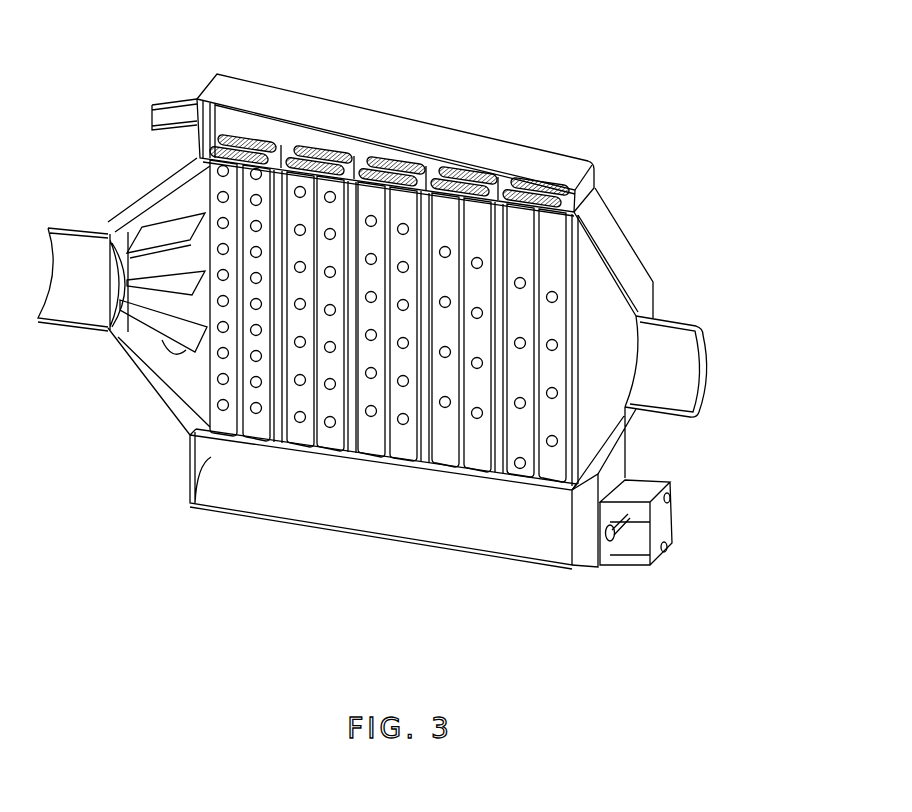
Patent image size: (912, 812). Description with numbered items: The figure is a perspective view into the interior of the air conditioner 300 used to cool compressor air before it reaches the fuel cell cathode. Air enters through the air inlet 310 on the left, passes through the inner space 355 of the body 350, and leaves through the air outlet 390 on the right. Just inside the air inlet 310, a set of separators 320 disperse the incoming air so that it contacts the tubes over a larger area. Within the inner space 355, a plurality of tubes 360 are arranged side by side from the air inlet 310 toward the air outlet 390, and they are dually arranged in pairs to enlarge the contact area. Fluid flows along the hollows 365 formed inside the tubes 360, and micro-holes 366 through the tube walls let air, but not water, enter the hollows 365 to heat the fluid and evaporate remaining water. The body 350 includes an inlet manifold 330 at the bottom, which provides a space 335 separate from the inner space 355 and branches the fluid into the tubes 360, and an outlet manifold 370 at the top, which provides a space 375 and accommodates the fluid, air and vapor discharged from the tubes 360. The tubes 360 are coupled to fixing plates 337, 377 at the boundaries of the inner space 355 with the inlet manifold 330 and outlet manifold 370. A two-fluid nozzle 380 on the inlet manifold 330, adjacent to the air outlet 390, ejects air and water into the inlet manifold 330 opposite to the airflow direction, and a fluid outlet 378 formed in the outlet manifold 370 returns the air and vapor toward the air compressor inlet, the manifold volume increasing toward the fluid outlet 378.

The air conditioner 300 is at (732, 124).
The air inlet 310 is at (88, 305).
The separators 320 is at (157, 232).
The inlet manifold 330 is at (518, 540).
The space 335 is at (366, 503).
The fixing plate 337 is at (588, 505).
The body 350 is at (608, 228).
The inner space 355 is at (592, 316).
The tubes 360 is at (338, 215).
The hollows 365 is at (318, 158).
The micro-holes 366 is at (330, 192).
The outlet manifold 370 is at (230, 122).
The space 375 is at (254, 123).
The fixing plate 377 is at (430, 172).
The fluid outlet 378 is at (156, 103).
The two-fluid nozzle 380 is at (628, 529).
The air outlet 390 is at (697, 361).